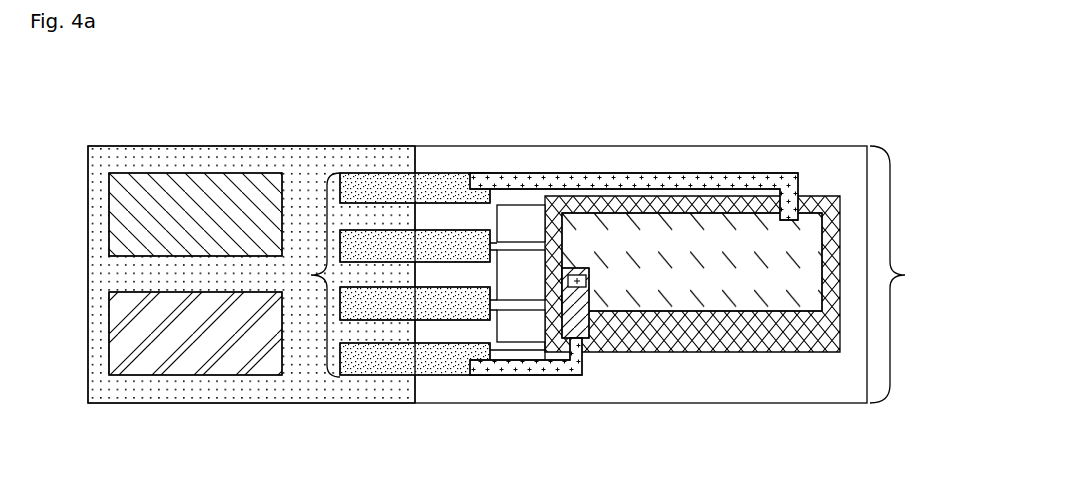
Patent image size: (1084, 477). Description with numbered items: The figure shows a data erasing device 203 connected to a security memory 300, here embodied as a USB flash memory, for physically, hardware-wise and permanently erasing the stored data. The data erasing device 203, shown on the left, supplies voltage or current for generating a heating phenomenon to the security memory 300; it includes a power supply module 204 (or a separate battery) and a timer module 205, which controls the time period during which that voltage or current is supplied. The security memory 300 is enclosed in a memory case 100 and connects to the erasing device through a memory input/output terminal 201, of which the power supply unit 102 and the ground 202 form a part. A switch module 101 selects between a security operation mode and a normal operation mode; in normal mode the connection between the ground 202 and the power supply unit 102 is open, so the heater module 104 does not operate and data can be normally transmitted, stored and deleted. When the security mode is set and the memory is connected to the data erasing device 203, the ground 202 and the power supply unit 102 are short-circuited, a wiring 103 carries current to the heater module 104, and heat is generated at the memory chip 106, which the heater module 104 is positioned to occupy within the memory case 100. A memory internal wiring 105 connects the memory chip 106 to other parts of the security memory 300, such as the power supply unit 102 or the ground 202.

The memory case 100 is at (775, 160).
The switch module 101 is at (567, 323).
The power supply unit 102 is at (397, 372).
The wiring 103 is at (658, 180).
The heater module 104 is at (812, 228).
The memory internal wiring 105 is at (523, 312).
The memory chip 106 is at (773, 342).
The memory input/output terminal 201 is at (381, 281).
The ground 202 is at (435, 183).
The data erasing device 203 is at (113, 163).
The power supply module 204 is at (124, 213).
The timer module 205 is at (124, 333).
The security memory 300 is at (908, 274).